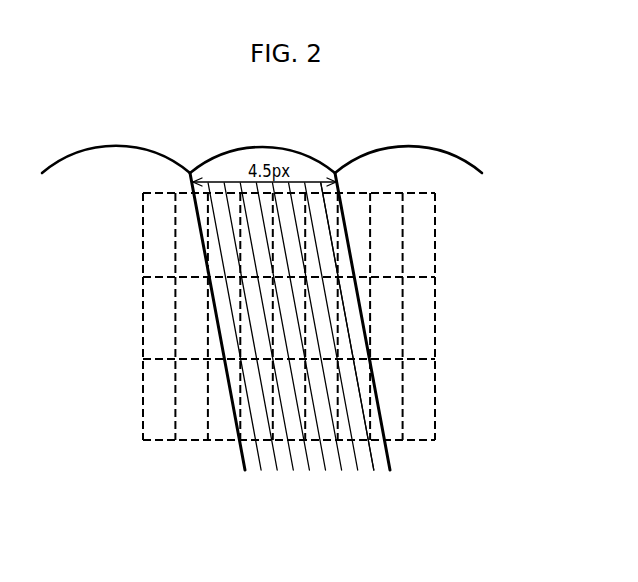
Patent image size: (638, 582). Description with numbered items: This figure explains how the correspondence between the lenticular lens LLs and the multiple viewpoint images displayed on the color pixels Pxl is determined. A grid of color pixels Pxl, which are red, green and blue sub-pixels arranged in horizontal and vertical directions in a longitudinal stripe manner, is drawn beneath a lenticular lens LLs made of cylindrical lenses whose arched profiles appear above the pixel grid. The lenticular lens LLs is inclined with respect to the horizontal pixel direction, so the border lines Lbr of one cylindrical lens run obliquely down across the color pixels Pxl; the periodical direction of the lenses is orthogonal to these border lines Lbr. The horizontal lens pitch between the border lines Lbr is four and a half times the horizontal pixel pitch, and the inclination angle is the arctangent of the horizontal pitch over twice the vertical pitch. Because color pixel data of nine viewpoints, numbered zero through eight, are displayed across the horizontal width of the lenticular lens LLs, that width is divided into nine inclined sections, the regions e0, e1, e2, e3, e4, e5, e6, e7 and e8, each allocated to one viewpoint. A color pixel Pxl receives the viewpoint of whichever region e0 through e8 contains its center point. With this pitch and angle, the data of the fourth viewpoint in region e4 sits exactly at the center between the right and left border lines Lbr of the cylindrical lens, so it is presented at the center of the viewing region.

The lenticular lens LLs is at (259, 153).
The color pixel Pxl is at (436, 225).
The border line Lbr is at (242, 461).
The region e0 is at (250, 470).
The region e1 is at (268, 470).
The region e2 is at (283, 470).
The region e3 is at (303, 470).
The region e4 is at (317, 470).
The region e5 is at (335, 470).
The region e6 is at (353, 470).
The region e7 is at (375, 470).
The region e8 is at (383, 470).